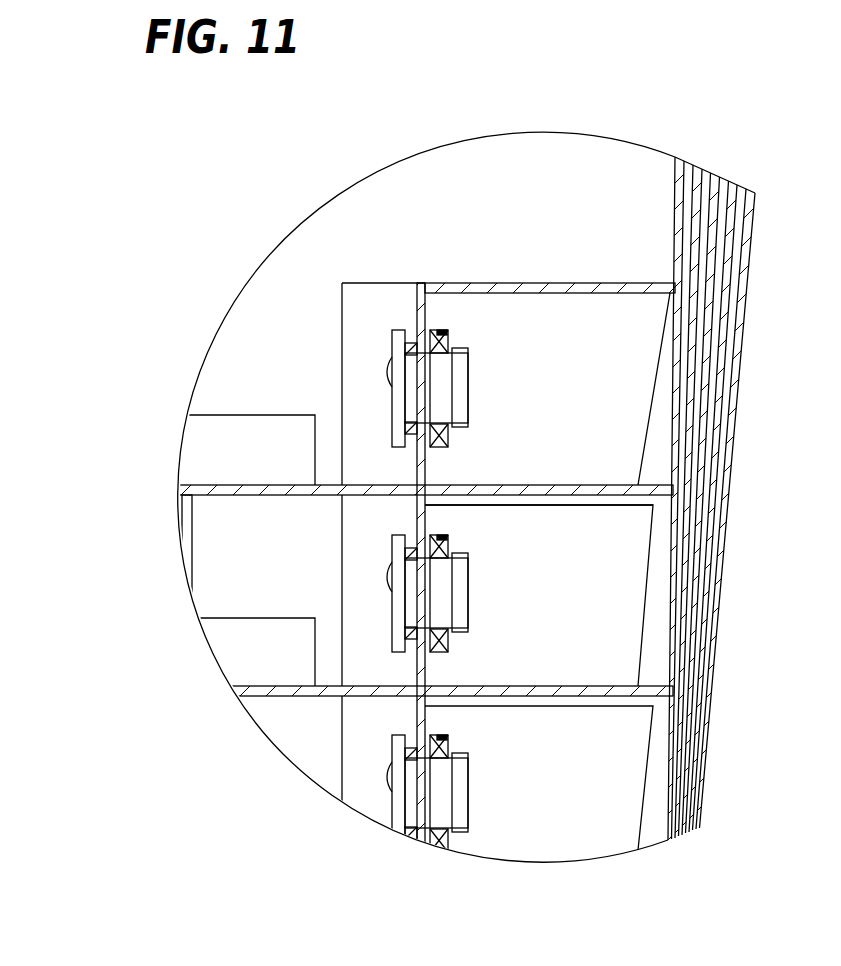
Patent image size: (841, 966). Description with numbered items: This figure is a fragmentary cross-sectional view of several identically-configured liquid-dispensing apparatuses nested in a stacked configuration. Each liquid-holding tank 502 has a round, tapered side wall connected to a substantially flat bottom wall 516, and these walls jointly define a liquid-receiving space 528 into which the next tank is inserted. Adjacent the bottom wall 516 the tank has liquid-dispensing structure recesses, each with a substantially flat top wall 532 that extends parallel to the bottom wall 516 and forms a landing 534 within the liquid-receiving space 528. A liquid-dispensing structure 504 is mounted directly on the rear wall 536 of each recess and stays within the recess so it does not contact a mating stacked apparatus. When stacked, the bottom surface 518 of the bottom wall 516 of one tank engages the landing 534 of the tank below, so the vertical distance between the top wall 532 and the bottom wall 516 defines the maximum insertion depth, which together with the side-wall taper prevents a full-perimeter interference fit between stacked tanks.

The liquid-holding tank 502 is at (240, 360).
The liquid-dispensing structure 504 is at (455, 373).
The bottom wall 516 is at (383, 690).
The bottom surface 518 is at (332, 695).
The liquid-receiving space 528 is at (238, 380).
The top wall 532 is at (542, 697).
The landing 534 is at (438, 695).
The rear wall 536 is at (427, 506).